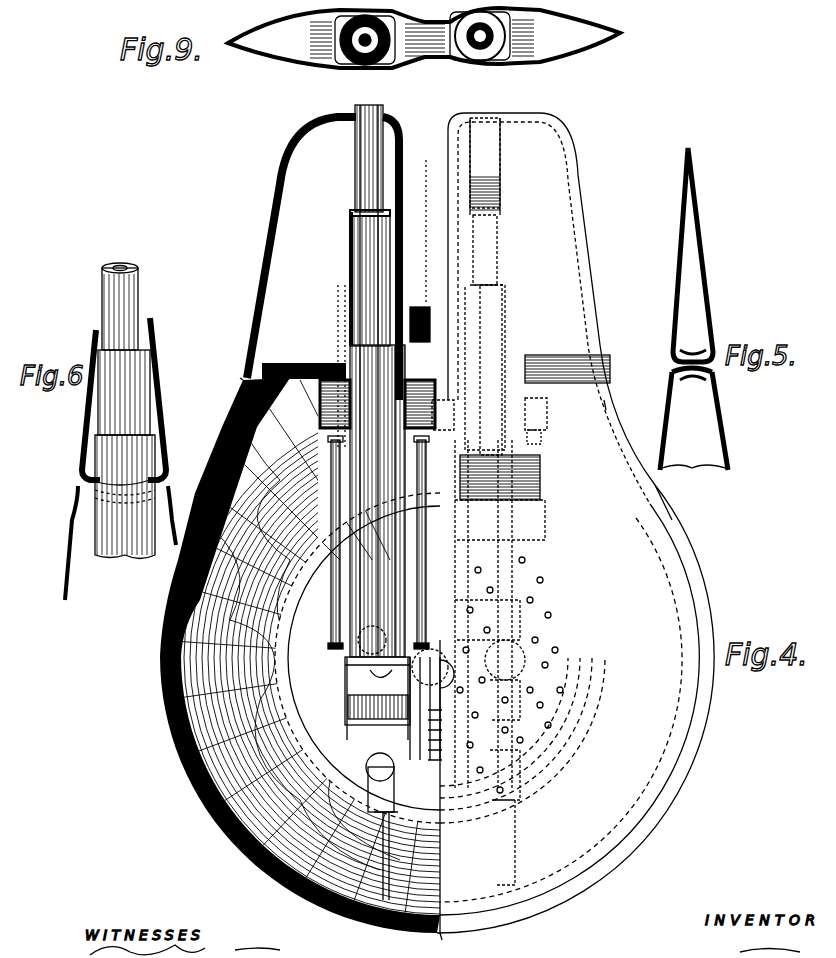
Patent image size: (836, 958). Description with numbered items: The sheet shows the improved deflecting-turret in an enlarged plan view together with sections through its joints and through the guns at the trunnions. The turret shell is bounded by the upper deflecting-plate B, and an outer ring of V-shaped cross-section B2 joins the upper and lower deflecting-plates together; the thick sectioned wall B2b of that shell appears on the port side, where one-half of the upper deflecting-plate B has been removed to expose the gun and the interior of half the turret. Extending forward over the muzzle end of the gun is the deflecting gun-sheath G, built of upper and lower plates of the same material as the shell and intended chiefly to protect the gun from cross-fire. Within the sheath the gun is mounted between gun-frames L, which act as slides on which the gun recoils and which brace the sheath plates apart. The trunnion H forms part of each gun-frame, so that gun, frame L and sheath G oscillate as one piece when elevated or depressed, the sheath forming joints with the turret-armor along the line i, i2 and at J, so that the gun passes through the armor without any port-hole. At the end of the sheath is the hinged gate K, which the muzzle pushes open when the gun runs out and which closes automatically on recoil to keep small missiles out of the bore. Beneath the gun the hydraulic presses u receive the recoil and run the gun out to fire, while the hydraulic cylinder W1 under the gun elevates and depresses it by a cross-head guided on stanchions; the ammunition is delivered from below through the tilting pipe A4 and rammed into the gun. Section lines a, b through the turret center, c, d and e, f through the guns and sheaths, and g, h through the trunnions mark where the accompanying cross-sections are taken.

In FIG. 9, the trunnion H is at (417, 38).
In FIG. 4, the trunnion H is at (521, 399).
In FIG. 4, the upper deflecting-plate B is at (575, 709).
In FIG. 6, the outer ring of V-shaped cross-section B2 is at (120, 494).
In FIG. 4, the outer ring of V-shaped cross-section B2 is at (690, 514).
In FIG. 4, the bulb wall section B2b is at (300, 648).
In FIG. 4, the deflecting gun-sheath G is at (451, 308).
In FIG. 4, the gun-frame L is at (440, 554).
In FIG. 4, the hinged gate K is at (485, 284).
In FIG. 4, the joint J is at (509, 585).
In FIG. 4, the hydraulic cylinder W1 is at (377, 683).
In FIG. 4, the piston A4 is at (410, 774).
In FIG. 4, the hydraulic press u is at (378, 381).
In FIG. 4, the section line a b is at (420, 251).
In FIG. 4, the section line a b a is at (441, 945).
In FIG. 4, the section line c d c is at (380, 184).
In FIG. 4, the section line c d is at (430, 178).
In FIG. 4, the section line e f e is at (375, 282).
In FIG. 4, the section line e f is at (430, 275).
In FIG. 4, the joint line i i is at (170, 378).
In FIG. 4, the joint line i i i2 is at (660, 370).
In FIG. 4, the section line g h g is at (224, 401).
In FIG. 4, the section line g h is at (625, 405).